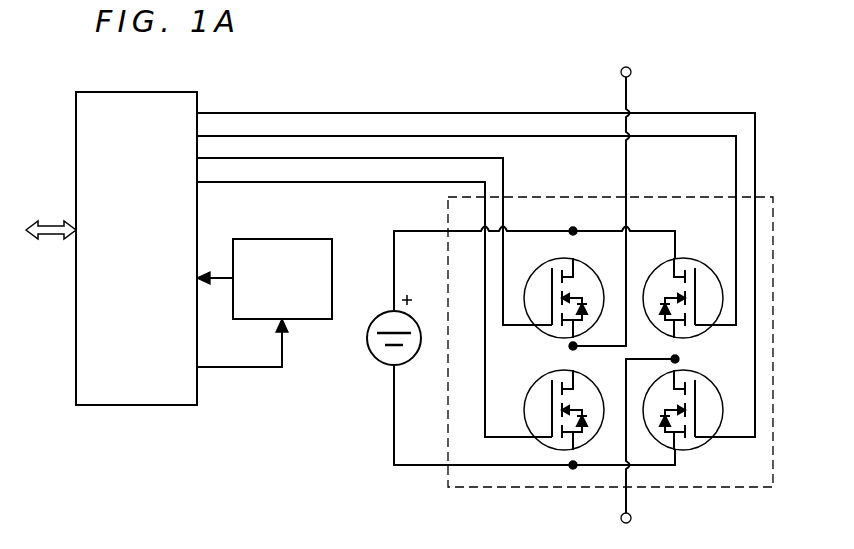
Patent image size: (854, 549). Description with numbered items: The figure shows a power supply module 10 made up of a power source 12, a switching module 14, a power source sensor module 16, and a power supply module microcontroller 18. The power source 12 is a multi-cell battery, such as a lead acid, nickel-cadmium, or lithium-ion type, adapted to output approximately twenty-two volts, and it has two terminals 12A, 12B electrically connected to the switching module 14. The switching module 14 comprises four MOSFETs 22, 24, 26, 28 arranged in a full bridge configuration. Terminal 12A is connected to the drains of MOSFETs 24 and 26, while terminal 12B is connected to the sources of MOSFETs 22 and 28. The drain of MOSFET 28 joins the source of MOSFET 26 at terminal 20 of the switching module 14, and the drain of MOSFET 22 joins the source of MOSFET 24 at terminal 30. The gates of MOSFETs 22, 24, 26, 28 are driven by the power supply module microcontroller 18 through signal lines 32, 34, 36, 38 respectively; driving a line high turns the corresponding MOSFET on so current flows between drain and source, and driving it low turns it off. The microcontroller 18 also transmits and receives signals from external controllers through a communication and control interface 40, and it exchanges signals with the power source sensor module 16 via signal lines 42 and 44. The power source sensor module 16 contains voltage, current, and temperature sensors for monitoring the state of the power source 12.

The power supply module 10 is at (724, 64).
The power source 12 is at (368, 349).
The terminal of power source 12A is at (394, 310).
The terminal of power source 12B is at (394, 366).
The switching module 14 is at (565, 196).
The power source sensor module 16 is at (282, 239).
The power supply module microcontroller 18 is at (133, 406).
The terminal of switching module 20 is at (627, 67).
The MOSFET 22 is at (700, 447).
The MOSFET 24 is at (698, 264).
The MOSFET 26 is at (546, 336).
The MOSFET 28 is at (548, 448).
The terminal of switching module 30 is at (632, 518).
The signal line 32 is at (251, 112).
The signal line 34 is at (286, 134).
The signal line 36 is at (325, 157).
The signal line 38 is at (366, 181).
The communication and control interface 40 is at (52, 222).
The signal line 42 is at (250, 370).
The signal line 44 is at (220, 272).